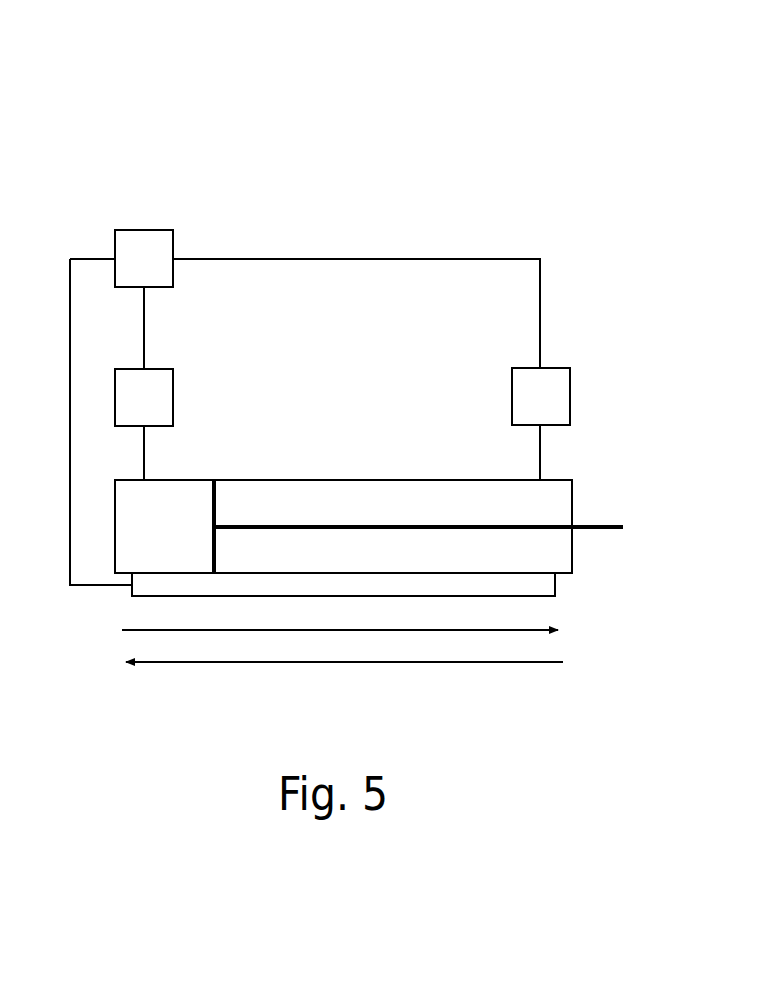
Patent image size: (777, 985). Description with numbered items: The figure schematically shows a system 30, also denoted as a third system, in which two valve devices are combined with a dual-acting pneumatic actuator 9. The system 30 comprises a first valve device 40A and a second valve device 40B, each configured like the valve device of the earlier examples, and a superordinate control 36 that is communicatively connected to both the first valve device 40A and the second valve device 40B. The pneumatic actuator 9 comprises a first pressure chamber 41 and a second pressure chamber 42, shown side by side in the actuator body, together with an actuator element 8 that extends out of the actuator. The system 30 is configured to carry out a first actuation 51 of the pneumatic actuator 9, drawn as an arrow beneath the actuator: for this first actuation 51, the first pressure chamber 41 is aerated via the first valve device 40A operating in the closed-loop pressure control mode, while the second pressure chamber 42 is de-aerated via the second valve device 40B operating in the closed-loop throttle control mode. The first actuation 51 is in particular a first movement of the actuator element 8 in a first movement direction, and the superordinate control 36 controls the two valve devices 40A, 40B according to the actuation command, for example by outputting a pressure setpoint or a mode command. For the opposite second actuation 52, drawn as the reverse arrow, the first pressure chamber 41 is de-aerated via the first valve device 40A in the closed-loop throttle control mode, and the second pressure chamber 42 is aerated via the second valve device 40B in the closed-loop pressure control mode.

The system 30 is at (117, 100).
The superordinate control 36 is at (327, 299).
The first valve device 40A is at (144, 424).
The second valve device 40B is at (541, 424).
The first pressure chamber 41 is at (164, 526).
The second pressure chamber 42 is at (418, 529).
The actuator element 8 is at (216, 512).
The pneumatic actuator 9 is at (343, 524).
The first actuation 51 is at (340, 619).
The second actuation 52 is at (344, 650).